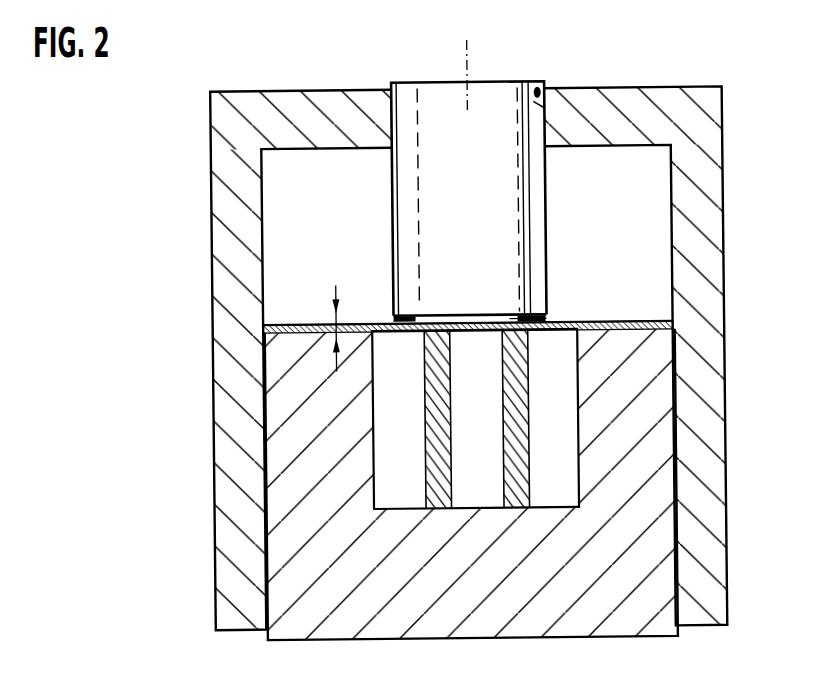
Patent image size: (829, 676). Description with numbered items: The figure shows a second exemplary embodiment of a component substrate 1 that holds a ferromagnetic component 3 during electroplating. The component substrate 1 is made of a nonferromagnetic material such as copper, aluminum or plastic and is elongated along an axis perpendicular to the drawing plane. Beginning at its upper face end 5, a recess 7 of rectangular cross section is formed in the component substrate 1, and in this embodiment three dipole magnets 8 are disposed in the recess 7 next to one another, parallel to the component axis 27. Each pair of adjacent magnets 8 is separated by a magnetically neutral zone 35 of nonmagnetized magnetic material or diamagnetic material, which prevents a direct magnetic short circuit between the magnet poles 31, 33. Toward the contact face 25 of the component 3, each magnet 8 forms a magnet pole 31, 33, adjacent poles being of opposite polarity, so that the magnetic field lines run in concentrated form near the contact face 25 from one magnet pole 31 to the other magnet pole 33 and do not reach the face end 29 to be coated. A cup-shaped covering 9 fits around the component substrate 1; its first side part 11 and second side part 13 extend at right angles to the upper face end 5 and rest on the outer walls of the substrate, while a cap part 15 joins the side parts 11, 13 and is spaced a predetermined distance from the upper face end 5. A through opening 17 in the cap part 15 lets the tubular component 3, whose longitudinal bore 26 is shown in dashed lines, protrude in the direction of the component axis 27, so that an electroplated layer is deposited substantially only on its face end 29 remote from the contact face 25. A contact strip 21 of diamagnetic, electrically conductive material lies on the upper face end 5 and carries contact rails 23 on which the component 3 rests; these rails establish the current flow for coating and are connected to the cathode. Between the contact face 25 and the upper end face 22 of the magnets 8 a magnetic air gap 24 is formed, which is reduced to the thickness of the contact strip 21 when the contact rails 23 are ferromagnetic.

The component substrate 1 is at (258, 533).
The component 3 is at (549, 176).
The upper face end 5 is at (642, 324).
The recess 7 is at (384, 424).
The magnet 8 is at (406, 448).
The covering 9 is at (733, 182).
The first side part 11 is at (229, 478).
The second side part 13 is at (704, 513).
The cap part 15 is at (637, 101).
The through opening 17 is at (546, 89).
The contact strip 21 is at (288, 321).
The upper end face 22 is at (522, 316).
The contact rail 23 is at (394, 315).
The magnetic air gap 24 is at (336, 297).
The contact face 25 is at (463, 314).
The longitudinal bore 26 is at (421, 100).
The component axis 27 is at (471, 93).
The face end 29 is at (521, 96).
The magnet pole 31 is at (385, 364).
The magnet pole 33 is at (468, 363).
The magnetically neutral zone 35 is at (517, 429).